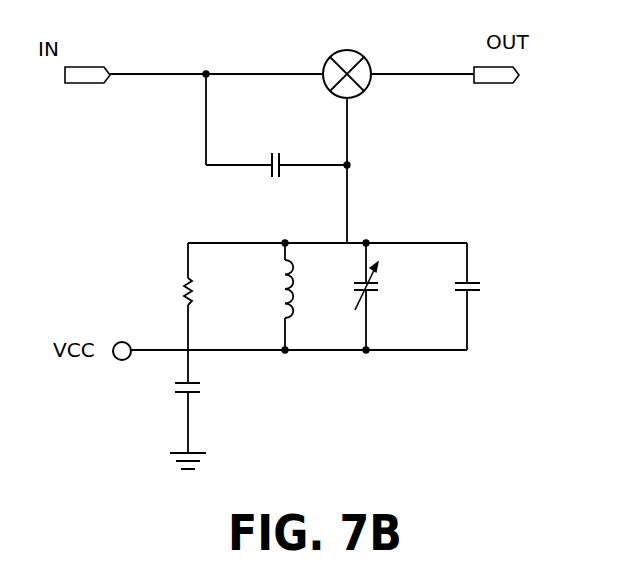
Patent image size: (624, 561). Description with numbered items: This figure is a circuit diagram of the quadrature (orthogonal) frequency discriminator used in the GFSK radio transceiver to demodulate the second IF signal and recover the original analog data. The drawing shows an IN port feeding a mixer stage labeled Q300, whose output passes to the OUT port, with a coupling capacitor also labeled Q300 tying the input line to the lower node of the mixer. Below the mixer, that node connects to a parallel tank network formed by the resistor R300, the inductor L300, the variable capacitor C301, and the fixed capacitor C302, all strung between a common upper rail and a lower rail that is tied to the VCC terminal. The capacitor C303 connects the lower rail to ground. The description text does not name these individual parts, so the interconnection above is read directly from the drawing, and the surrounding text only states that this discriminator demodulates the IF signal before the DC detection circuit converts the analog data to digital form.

The mixer / switching transistor stage with coupling capacitor Q300 is at (297, 128).
The resistor R300 is at (152, 296).
The inductor L300 is at (259, 296).
The variable capacitor C301 is at (395, 296).
The capacitor C302 is at (502, 296).
The bypass capacitor C303 is at (218, 409).